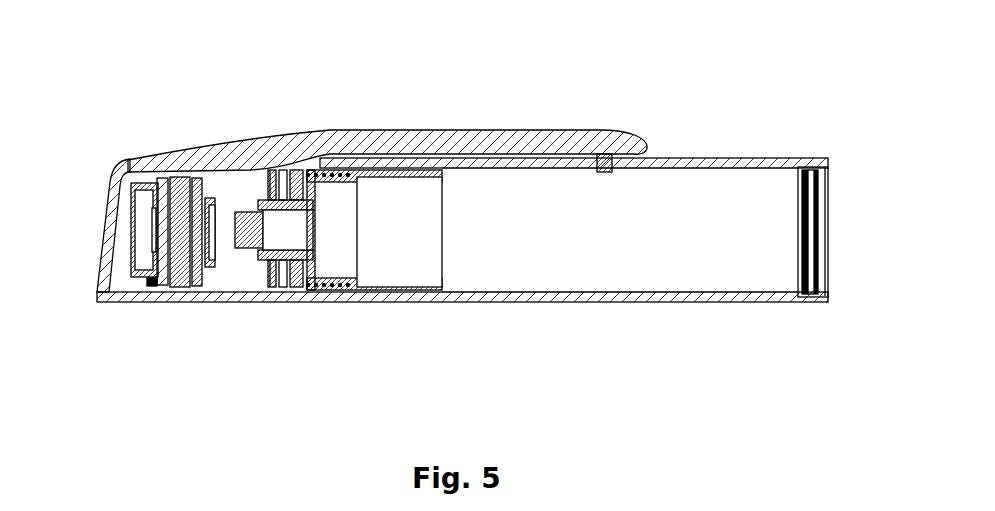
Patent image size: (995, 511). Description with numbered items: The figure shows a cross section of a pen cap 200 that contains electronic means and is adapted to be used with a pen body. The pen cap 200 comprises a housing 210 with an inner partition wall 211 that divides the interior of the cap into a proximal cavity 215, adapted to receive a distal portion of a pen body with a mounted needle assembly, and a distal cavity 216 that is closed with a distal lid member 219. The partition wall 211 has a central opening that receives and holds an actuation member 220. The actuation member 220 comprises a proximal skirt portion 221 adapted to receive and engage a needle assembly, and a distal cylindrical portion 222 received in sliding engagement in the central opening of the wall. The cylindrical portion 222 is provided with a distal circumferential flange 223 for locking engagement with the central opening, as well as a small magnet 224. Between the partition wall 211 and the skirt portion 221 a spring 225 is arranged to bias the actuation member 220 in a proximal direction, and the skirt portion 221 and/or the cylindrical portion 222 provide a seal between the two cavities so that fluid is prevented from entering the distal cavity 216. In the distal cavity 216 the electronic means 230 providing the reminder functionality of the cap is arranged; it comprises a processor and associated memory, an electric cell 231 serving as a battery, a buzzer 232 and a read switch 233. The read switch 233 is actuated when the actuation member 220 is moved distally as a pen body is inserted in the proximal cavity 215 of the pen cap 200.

The pen cap 200 is at (760, 125).
The housing 210 is at (708, 292).
The inner partition wall 211 is at (277, 193).
The proximal cavity 215 is at (642, 260).
The distal cavity 216 is at (242, 192).
The distal lid member 219 is at (125, 210).
The actuation member 220 is at (442, 227).
The proximal skirt portion 221 is at (408, 243).
The distal cylindrical portion 222 is at (290, 227).
The distal circumferential flange 223 is at (258, 260).
The small magnet 224 is at (242, 245).
The spring 225 is at (292, 173).
The electronic means 230 is at (152, 282).
The electric cell 231 is at (173, 192).
The buzzer 232 is at (142, 227).
The read switch 233 is at (208, 277).